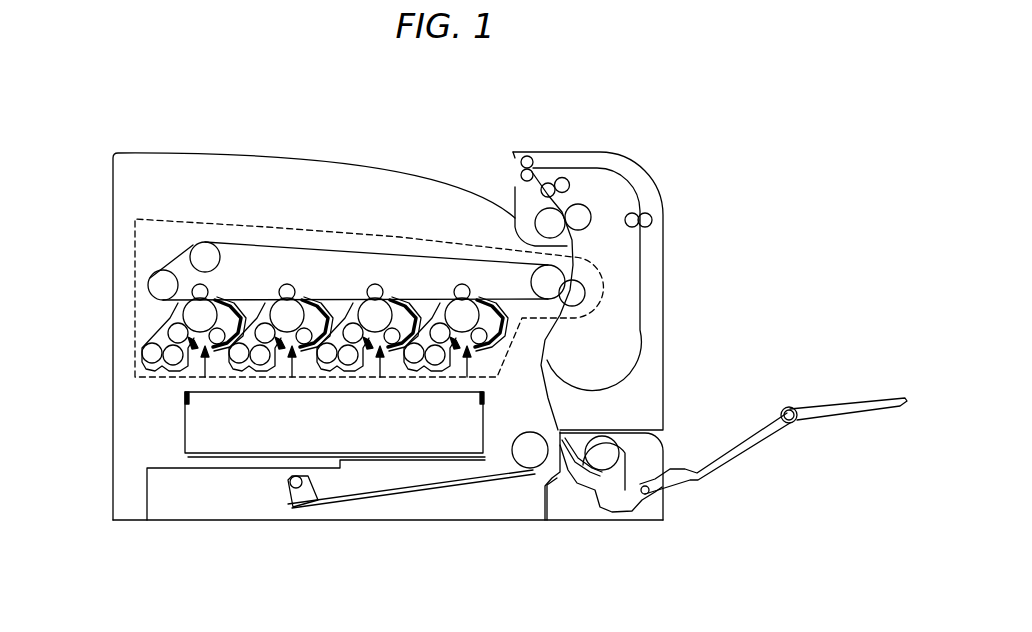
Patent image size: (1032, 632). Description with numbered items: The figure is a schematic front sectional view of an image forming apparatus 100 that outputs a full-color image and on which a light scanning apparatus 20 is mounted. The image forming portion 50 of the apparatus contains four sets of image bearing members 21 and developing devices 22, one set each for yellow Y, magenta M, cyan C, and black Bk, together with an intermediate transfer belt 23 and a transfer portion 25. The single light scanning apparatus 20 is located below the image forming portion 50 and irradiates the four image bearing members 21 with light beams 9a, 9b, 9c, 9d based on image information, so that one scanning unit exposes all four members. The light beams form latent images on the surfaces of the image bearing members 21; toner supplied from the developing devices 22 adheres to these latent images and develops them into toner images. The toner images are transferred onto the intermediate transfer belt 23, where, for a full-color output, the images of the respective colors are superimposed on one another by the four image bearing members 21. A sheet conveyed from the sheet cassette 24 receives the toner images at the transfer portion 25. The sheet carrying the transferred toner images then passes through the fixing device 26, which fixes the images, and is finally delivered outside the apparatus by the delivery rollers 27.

The image forming apparatus 100 is at (438, 336).
The image forming portion 50 is at (332, 262).
The intermediate transfer belt 23 is at (321, 256).
The image bearing member 21 is at (123, 324).
The developing device 22 is at (114, 352).
The light scanning apparatus 20 is at (308, 476).
The sheet cassette 24 is at (418, 509).
The transfer portion 25 is at (674, 208).
The fixing device 26 is at (629, 169).
The delivery rollers 27 is at (599, 116).
The light beam 9a is at (129, 402).
The light beam 9b is at (224, 456).
The light beam 9c is at (357, 457).
The light beam 9d is at (478, 462).
The yellow Y is at (123, 220).
The magenta M is at (209, 230).
The cyan C is at (297, 230).
The black Bk is at (384, 230).